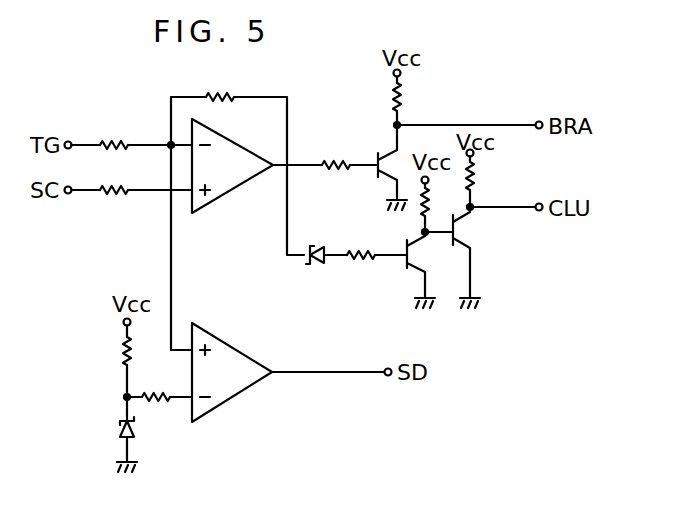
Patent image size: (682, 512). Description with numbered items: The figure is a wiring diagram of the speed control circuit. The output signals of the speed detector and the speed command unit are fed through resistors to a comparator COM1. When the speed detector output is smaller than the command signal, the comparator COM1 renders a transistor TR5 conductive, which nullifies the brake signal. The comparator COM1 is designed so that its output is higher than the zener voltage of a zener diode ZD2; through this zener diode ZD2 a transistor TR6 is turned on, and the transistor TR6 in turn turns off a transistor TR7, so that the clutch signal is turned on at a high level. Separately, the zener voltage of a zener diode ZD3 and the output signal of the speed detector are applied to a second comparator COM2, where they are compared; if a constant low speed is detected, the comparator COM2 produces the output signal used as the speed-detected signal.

The comparator COM1 is at (232, 194).
The comparator COM2 is at (250, 352).
The transistor TR5 is at (386, 152).
The transistor TR6 is at (414, 257).
The transistor TR7 is at (459, 230).
The zener diode ZD2 is at (313, 247).
The zener diode ZD3 is at (118, 428).